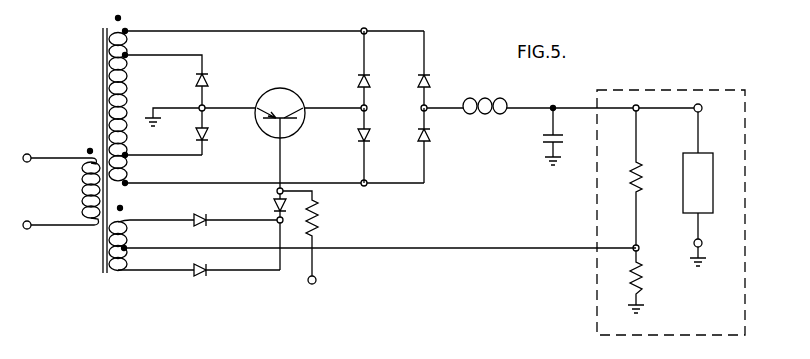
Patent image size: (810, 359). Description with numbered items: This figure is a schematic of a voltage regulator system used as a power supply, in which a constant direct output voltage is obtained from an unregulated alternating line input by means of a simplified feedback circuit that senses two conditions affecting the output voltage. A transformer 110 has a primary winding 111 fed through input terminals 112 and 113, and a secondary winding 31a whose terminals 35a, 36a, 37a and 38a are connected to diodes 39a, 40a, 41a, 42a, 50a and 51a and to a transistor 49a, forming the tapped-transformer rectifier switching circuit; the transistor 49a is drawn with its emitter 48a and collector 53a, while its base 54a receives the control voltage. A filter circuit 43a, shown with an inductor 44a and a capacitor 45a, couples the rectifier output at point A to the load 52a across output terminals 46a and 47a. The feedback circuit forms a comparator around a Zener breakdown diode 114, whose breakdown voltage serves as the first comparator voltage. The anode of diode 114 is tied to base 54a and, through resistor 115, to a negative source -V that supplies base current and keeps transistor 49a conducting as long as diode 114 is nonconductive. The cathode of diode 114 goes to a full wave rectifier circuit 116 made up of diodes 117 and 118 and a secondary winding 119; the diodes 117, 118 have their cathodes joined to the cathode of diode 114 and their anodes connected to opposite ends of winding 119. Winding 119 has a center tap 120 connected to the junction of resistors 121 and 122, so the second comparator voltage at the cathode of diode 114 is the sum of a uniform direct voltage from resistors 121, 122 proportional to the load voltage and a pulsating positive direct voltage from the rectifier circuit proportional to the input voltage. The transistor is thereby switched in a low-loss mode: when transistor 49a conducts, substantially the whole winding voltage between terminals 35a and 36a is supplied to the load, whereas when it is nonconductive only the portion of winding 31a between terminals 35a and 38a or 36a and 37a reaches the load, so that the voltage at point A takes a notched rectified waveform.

The transformer 110 is at (101, 140).
The primary winding 111 is at (83, 190).
The input terminal 112 is at (55, 147).
The input terminal 113 is at (56, 239).
The secondary winding 31a is at (128, 85).
The terminal 35a is at (126, 31).
The terminal 36a is at (126, 183).
The terminal 37a is at (126, 56).
The terminal 38a is at (128, 155).
The diode 41a is at (196, 83).
The diode 42a is at (207, 135).
The transistor 49a is at (296, 126).
The transistor emitter 48a is at (269, 104).
The transistor collector 53a is at (299, 118).
The base 54a is at (283, 123).
The diode 51a is at (358, 81).
The diode 50a is at (369, 137).
The diode 39a is at (418, 83).
The diode 40a is at (430, 137).
The rectifier output point A is at (428, 112).
The filter circuit 43a is at (427, 204).
The inductor 44a is at (488, 99).
The capacitor 45a is at (562, 135).
The load terminal 46a is at (716, 109).
The load terminal 47a is at (714, 250).
The load 52a is at (683, 182).
The resistor 121 is at (641, 161).
The resistor 122 is at (641, 283).
The full wave rectifier circuit 116 is at (372, 245).
The secondary winding 119 is at (122, 234).
The center tap 120 is at (122, 258).
The diode 117 is at (232, 208).
The diode 118 is at (235, 282).
The Zener breakdown diode 114 is at (274, 206).
The resistor 115 is at (319, 221).